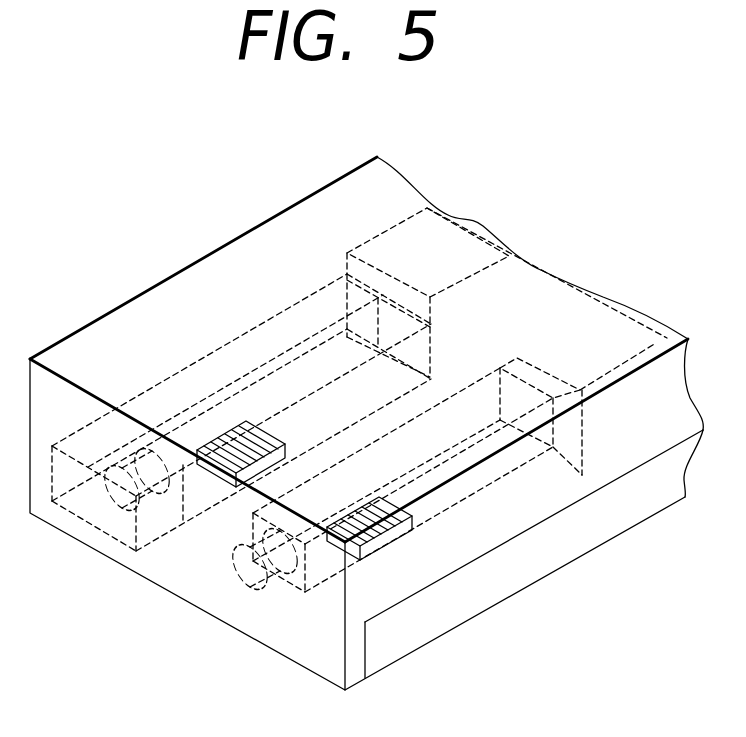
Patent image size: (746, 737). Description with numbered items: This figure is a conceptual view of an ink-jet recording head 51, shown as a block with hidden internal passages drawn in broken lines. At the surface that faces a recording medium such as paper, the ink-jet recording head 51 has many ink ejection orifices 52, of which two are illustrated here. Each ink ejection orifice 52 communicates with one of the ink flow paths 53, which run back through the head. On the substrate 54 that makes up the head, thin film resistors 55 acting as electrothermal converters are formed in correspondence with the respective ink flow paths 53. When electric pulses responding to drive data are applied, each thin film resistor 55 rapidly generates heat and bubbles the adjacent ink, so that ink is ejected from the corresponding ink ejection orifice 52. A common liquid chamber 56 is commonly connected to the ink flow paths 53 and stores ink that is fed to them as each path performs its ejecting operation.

The ink-jet recording head 51 is at (176, 297).
The ink ejection orifices 52 is at (247, 568).
The ink flow paths 53 is at (517, 400).
The substrate 54 is at (562, 548).
The thin film resistors 55 is at (382, 540).
The common liquid chamber 56 is at (562, 303).